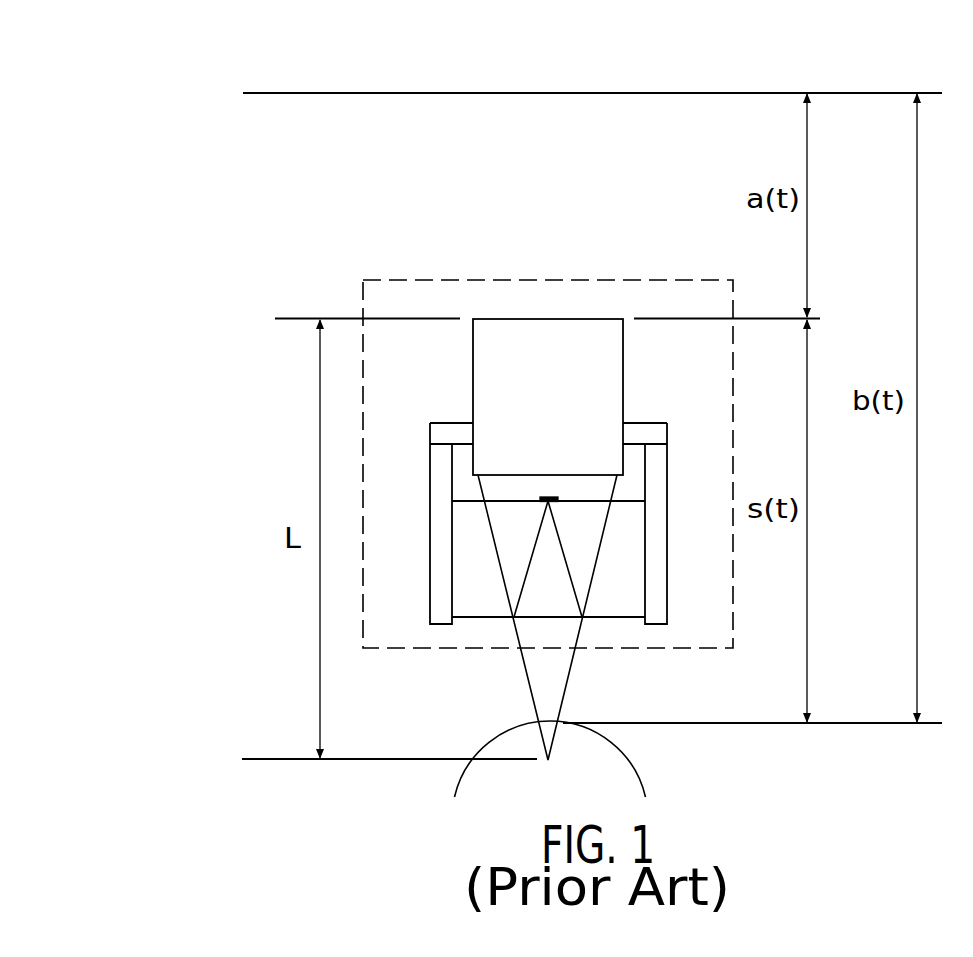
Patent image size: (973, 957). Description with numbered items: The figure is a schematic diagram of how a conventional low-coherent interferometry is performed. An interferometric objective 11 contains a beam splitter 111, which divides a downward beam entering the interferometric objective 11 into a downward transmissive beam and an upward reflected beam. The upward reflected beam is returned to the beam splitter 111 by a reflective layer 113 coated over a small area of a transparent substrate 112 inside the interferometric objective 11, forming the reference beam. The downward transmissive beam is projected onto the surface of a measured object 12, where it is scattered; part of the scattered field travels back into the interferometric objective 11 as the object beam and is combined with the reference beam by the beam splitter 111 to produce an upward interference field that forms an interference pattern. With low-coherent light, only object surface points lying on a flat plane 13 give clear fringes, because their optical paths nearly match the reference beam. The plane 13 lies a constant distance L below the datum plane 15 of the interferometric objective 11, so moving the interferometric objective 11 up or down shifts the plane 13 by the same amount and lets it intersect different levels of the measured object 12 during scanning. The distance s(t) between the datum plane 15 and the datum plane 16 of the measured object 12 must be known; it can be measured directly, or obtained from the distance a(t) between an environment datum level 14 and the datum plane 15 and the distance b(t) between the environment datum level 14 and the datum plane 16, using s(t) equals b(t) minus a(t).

The interferometric objective 11 is at (542, 485).
The beam splitter 111 is at (607, 617).
The transparent substrate 112 is at (628, 492).
The reflective layer 113 is at (552, 497).
The measured object 12 is at (604, 762).
The plane 13 is at (420, 759).
The environment datum level 14 is at (305, 93).
The datum plane of the interferometric objective 15 is at (290, 318).
The datum plane of the measured object 16 is at (875, 723).